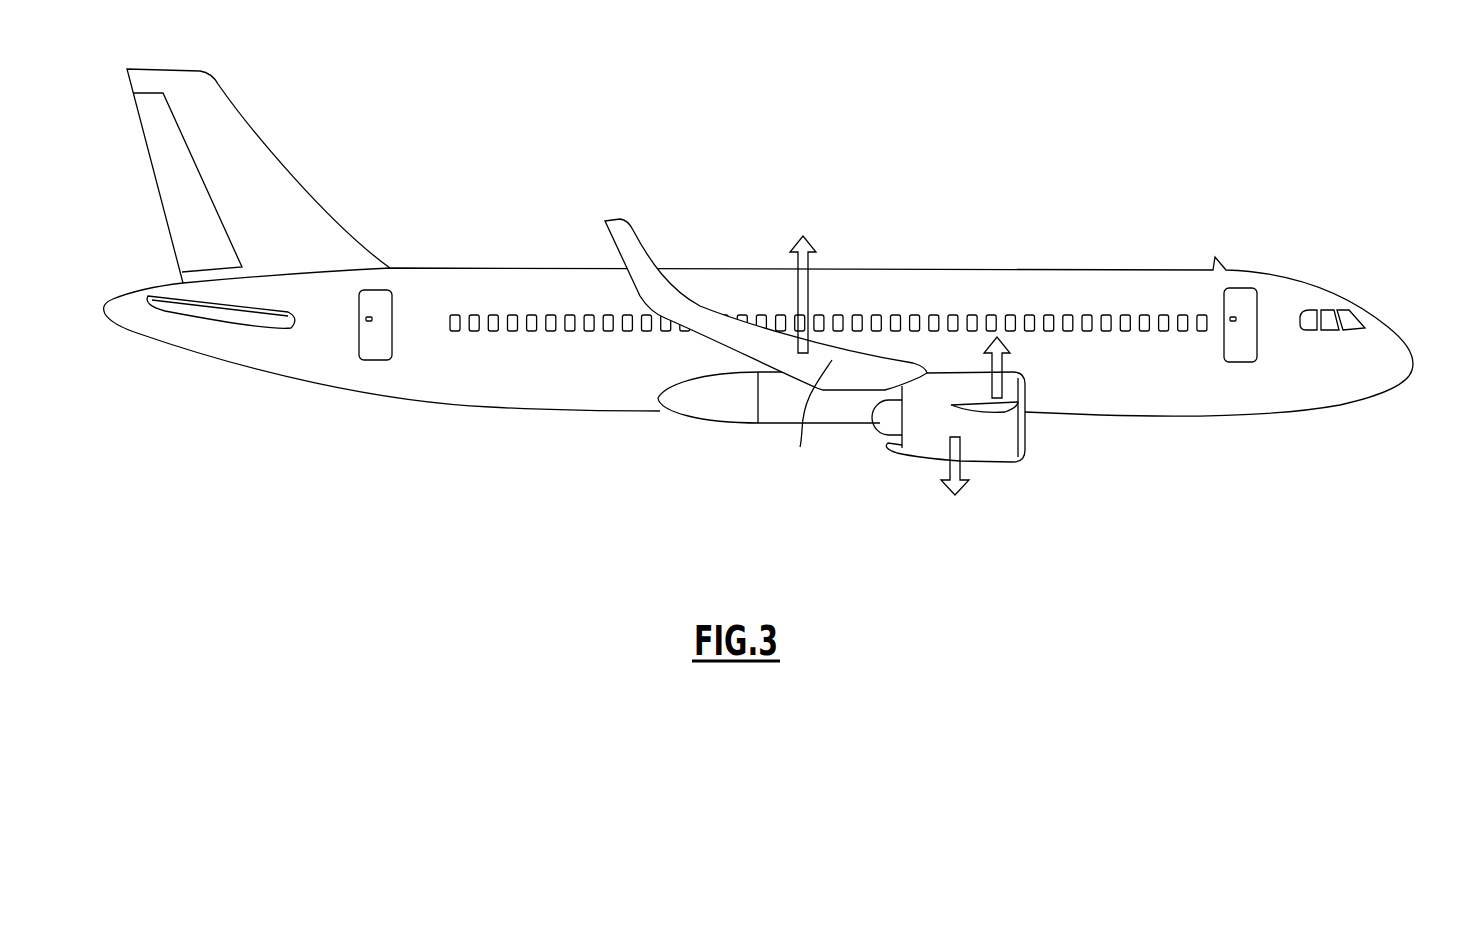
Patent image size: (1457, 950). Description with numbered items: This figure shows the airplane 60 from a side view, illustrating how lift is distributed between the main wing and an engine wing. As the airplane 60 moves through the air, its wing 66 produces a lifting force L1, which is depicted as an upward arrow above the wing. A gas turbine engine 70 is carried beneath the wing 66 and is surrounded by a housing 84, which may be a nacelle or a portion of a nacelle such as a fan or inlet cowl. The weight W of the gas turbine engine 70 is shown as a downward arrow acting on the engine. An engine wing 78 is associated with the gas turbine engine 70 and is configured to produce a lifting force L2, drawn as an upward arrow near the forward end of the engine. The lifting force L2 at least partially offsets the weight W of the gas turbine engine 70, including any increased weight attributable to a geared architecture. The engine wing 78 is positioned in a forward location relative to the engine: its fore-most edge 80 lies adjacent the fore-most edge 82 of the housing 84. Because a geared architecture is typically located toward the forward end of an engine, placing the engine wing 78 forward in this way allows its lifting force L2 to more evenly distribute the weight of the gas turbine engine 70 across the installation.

The airplane 60 is at (1360, 232).
The wing 66 is at (800, 447).
The gas turbine engine 70 is at (1016, 492).
The engine wing 78 is at (997, 415).
The fore-most edge of the engine wing 80 is at (1025, 412).
The fore-most edge of the housing 82 is at (1027, 401).
The housing 84 is at (923, 448).
The lifting force L1 is at (812, 250).
The lifting force L2 is at (1003, 363).
The weight W is at (948, 472).